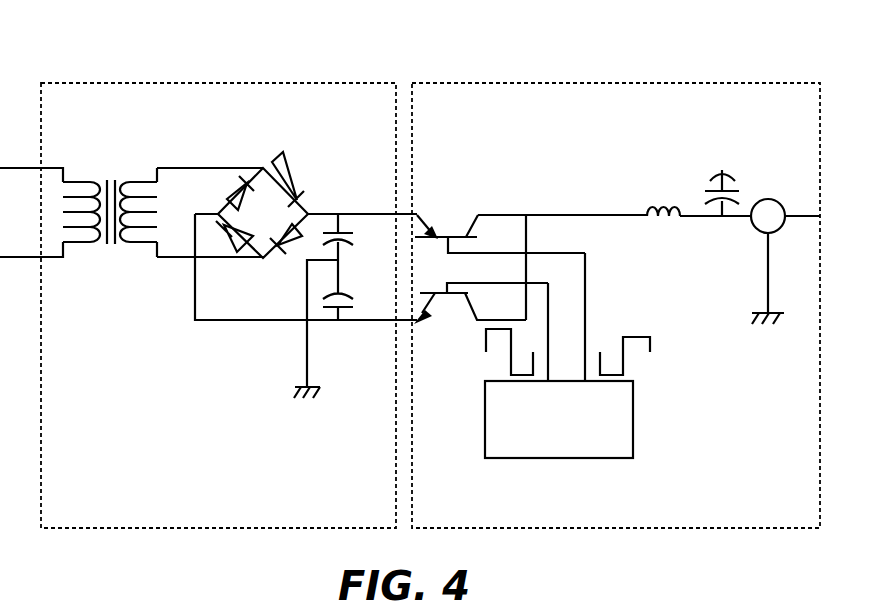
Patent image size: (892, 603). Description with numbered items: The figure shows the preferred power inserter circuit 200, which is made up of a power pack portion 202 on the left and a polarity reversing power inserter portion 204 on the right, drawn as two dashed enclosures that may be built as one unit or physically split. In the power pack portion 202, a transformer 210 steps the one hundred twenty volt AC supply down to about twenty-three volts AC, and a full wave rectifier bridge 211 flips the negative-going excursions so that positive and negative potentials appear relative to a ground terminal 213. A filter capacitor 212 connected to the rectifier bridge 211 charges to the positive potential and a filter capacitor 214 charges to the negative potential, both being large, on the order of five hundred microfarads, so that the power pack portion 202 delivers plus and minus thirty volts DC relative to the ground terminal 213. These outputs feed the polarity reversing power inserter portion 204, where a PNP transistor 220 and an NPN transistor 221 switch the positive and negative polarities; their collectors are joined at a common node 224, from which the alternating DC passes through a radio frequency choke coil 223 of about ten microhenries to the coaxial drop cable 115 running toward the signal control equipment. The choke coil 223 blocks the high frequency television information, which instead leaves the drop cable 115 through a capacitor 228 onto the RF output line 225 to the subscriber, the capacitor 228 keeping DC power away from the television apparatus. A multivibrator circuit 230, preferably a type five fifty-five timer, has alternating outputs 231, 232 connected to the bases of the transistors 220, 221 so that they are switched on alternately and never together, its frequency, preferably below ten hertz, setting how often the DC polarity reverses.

The power inserter circuit 200 is at (452, 56).
The power pack portion 202 is at (246, 529).
The polarity reversing power inserter portion 204 is at (661, 530).
The transformer 210 is at (78, 243).
The full wave rectifier bridge 211 is at (284, 173).
The filter capacitor 212 is at (343, 245).
The ground terminal 213 is at (306, 338).
The filter capacitor 214 is at (352, 298).
The PNP transistor 220 is at (467, 222).
The NPN transistor 221 is at (463, 307).
The radio frequency choke coil 223 is at (670, 223).
The node 224 is at (557, 215).
The RF output line 225 is at (708, 190).
The capacitor 228 is at (729, 201).
The multivibrator circuit 230 is at (634, 415).
The alternating output 231 is at (586, 320).
The alternating output 232 is at (549, 322).
The coaxial drop cable 115 is at (802, 213).